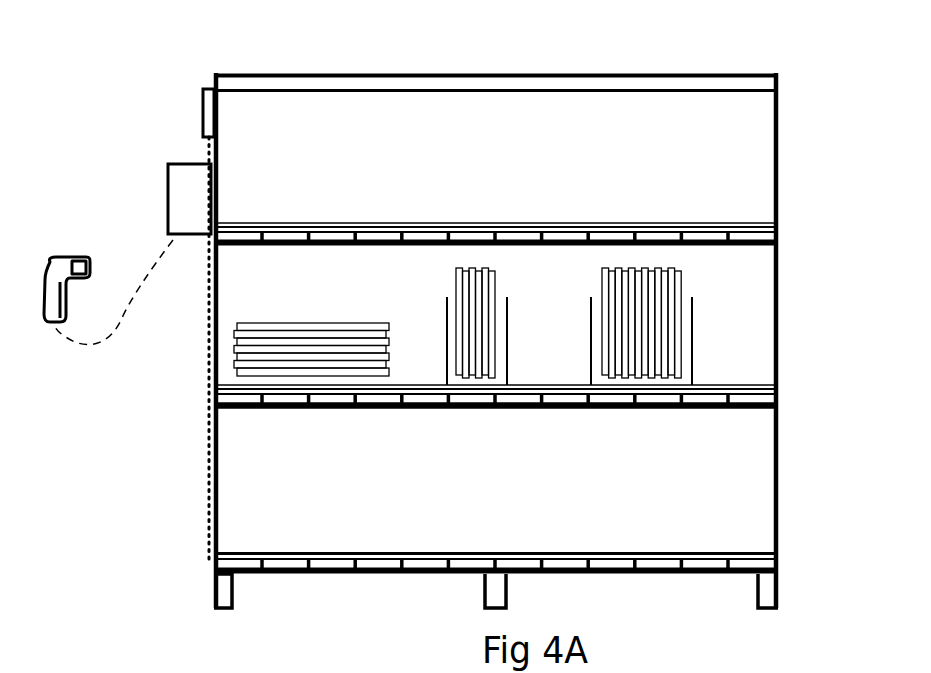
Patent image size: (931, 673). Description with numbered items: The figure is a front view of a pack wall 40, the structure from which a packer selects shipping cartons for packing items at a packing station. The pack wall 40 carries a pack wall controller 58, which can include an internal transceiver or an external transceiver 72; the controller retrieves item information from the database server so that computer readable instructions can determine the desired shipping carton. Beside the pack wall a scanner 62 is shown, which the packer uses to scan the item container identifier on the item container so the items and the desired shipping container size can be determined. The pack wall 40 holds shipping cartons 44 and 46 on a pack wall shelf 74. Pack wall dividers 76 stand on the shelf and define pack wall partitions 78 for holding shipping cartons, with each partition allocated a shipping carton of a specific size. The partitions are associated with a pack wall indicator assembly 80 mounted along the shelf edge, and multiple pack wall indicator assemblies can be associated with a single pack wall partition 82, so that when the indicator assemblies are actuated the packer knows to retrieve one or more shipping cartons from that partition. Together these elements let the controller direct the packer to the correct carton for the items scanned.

The pack wall 40 is at (504, 40).
The shipping carton 44 is at (270, 323).
The shipping carton 46 is at (456, 283).
The pack wall controller 58 is at (168, 232).
The scanner 62 is at (52, 257).
The external transceiver 72 is at (203, 101).
The pack wall shelf 74 is at (778, 385).
The pack wall divider 76 is at (508, 337).
The pack wall partition 78 is at (516, 276).
The pack wall indicator assembly 80 is at (222, 399).
The pack wall partition 82 is at (390, 420).